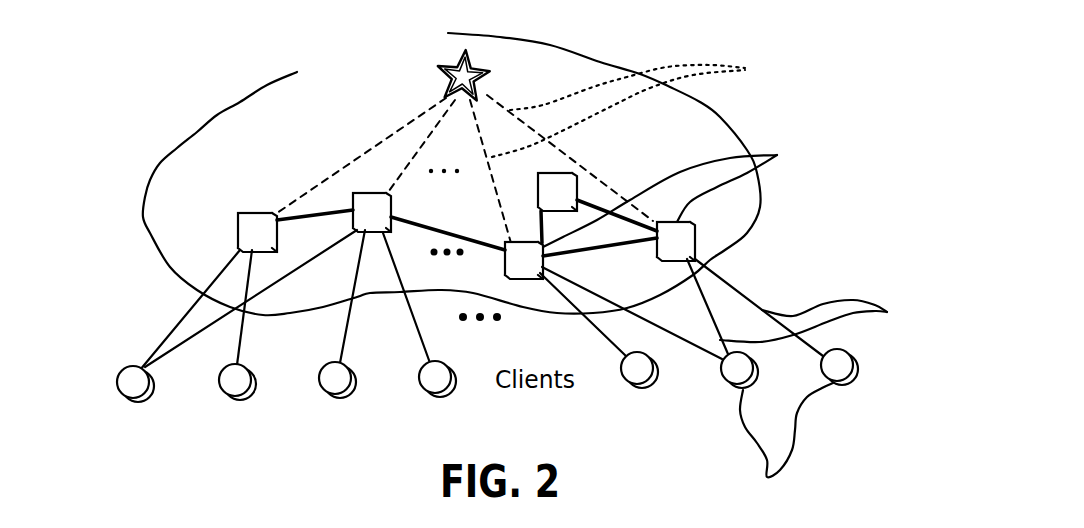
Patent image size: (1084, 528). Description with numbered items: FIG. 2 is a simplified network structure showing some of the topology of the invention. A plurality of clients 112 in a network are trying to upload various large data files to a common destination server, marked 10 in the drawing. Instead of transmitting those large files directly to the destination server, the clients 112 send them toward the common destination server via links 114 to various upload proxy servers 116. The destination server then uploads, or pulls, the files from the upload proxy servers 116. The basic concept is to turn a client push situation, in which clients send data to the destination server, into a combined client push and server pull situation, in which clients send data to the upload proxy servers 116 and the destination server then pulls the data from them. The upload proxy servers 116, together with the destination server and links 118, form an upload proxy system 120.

The destination server 10 is at (487, 72).
The clients 112 is at (786, 449).
The links 114 is at (887, 312).
The upload proxy servers 116 is at (758, 153).
The links 118 is at (740, 69).
The upload proxy system 120 is at (720, 117).